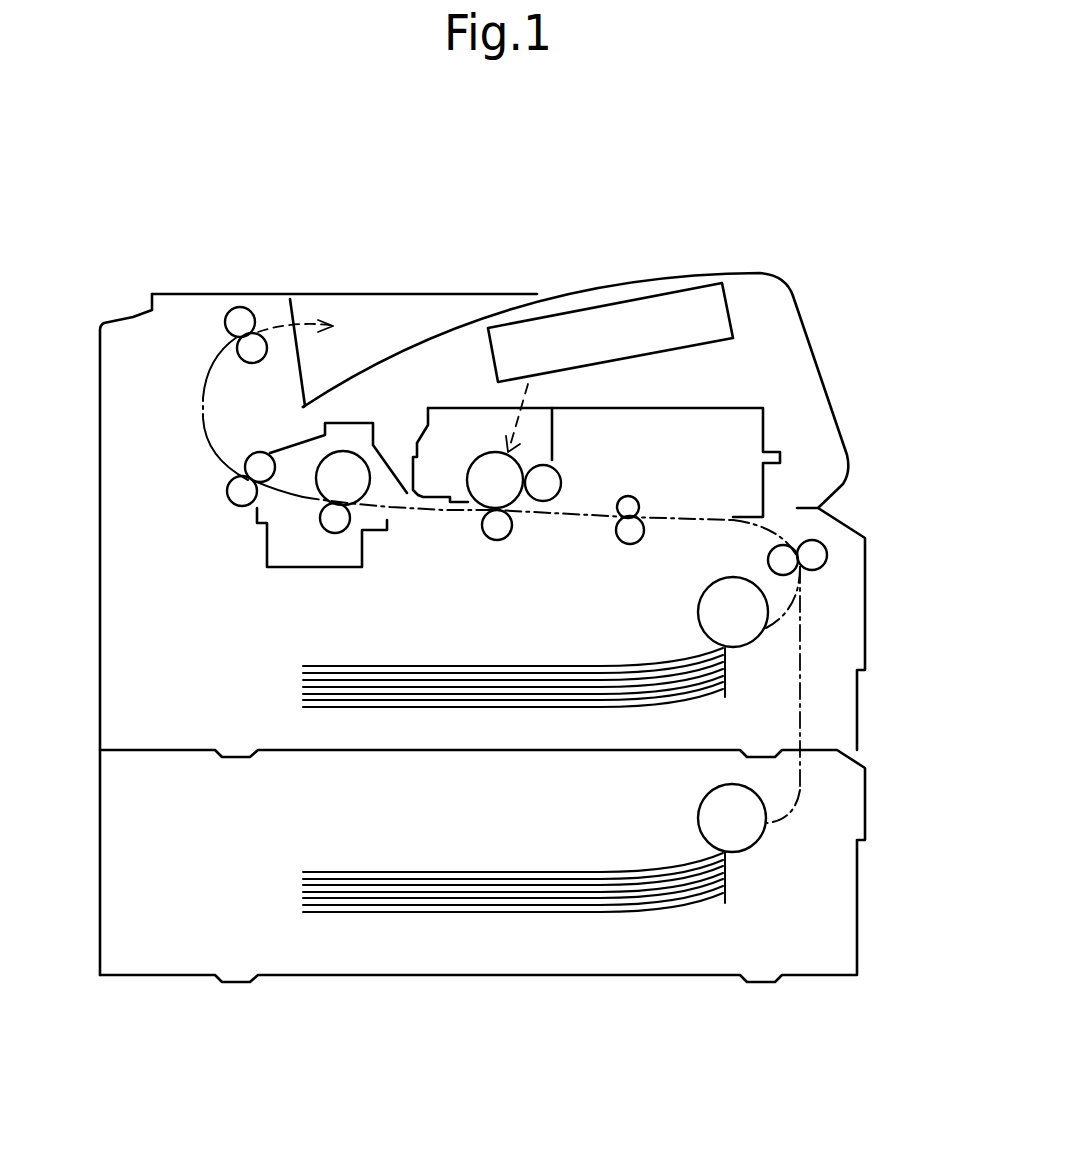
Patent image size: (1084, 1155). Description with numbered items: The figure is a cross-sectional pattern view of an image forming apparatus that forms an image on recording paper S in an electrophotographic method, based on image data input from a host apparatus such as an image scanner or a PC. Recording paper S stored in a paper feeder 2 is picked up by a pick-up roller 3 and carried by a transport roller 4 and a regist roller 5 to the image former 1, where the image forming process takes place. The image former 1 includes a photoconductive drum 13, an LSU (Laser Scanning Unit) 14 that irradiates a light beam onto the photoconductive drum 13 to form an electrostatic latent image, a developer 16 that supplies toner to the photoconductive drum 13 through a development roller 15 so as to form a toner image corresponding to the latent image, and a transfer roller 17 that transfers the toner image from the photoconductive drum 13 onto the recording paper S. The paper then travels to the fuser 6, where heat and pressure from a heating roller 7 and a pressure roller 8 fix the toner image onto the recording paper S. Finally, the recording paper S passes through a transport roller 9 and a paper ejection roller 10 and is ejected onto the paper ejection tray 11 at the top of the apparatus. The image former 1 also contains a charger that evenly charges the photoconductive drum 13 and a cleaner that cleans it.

The image former 1 is at (776, 378).
The paper feeder 2 is at (813, 682).
The pick-up roller 3 is at (765, 633).
The transport roller 4 is at (827, 557).
The regist roller 5 is at (630, 544).
The fuser 6 is at (246, 568).
The heating roller 7 is at (367, 493).
The pressure roller 8 is at (343, 530).
The transport roller 9 is at (227, 500).
The paper ejection roller 10 is at (238, 307).
The paper ejection tray 11 is at (373, 368).
The photoconductive drum 13 is at (472, 453).
The LSU (Laser Scanning Unit) 14 is at (630, 297).
The development roller 15 is at (552, 505).
The developer 16 is at (763, 433).
The transfer roller 17 is at (497, 540).
The recording paper S is at (457, 665).